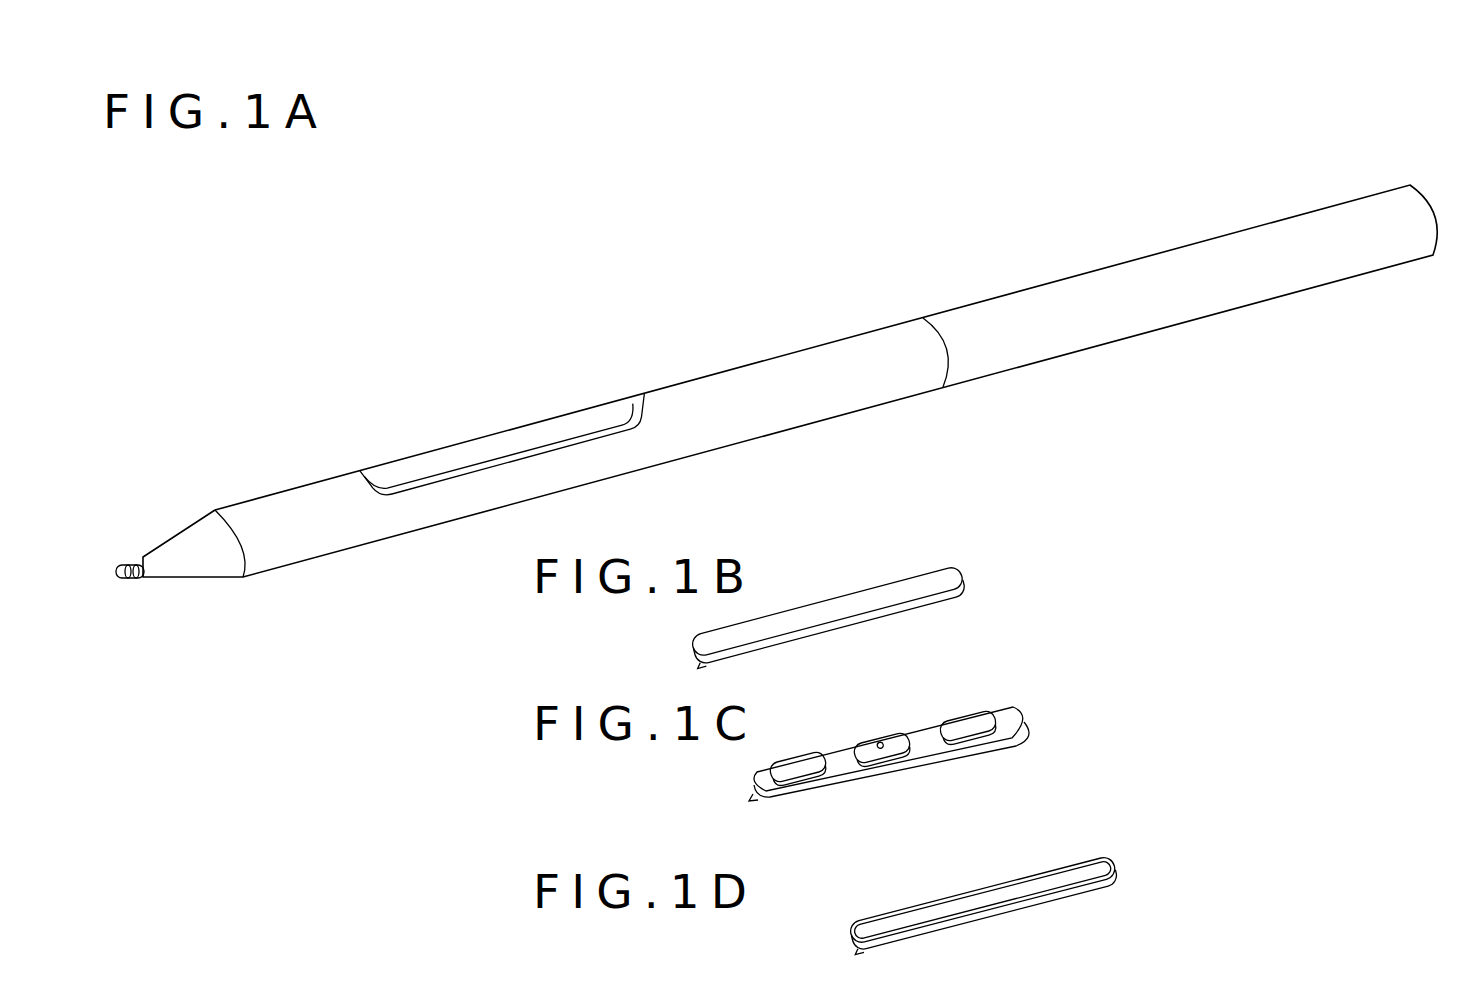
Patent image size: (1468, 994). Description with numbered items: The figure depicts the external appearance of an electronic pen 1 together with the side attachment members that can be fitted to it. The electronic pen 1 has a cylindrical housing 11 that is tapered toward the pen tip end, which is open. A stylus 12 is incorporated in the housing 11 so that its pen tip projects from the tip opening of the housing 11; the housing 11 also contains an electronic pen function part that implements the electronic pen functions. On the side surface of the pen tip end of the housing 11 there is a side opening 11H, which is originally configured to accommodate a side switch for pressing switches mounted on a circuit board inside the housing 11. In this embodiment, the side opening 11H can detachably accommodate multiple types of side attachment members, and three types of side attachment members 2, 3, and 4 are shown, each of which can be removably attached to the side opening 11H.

In FIG. 1A, the electronic pen 1 is at (767, 411).
In FIG. 1A, the side attachment member 2 is at (470, 465).
In FIG. 1B, the side attachment member 2 is at (863, 570).
In FIG. 1C, the side attachment member 3 is at (901, 716).
In FIG. 1D, the side attachment member 4 is at (991, 871).
In FIG. 1A, the housing 11 is at (677, 460).
In FIG. 1A, the side opening 11H is at (633, 400).
In FIG. 1A, the stylus 12 is at (120, 578).